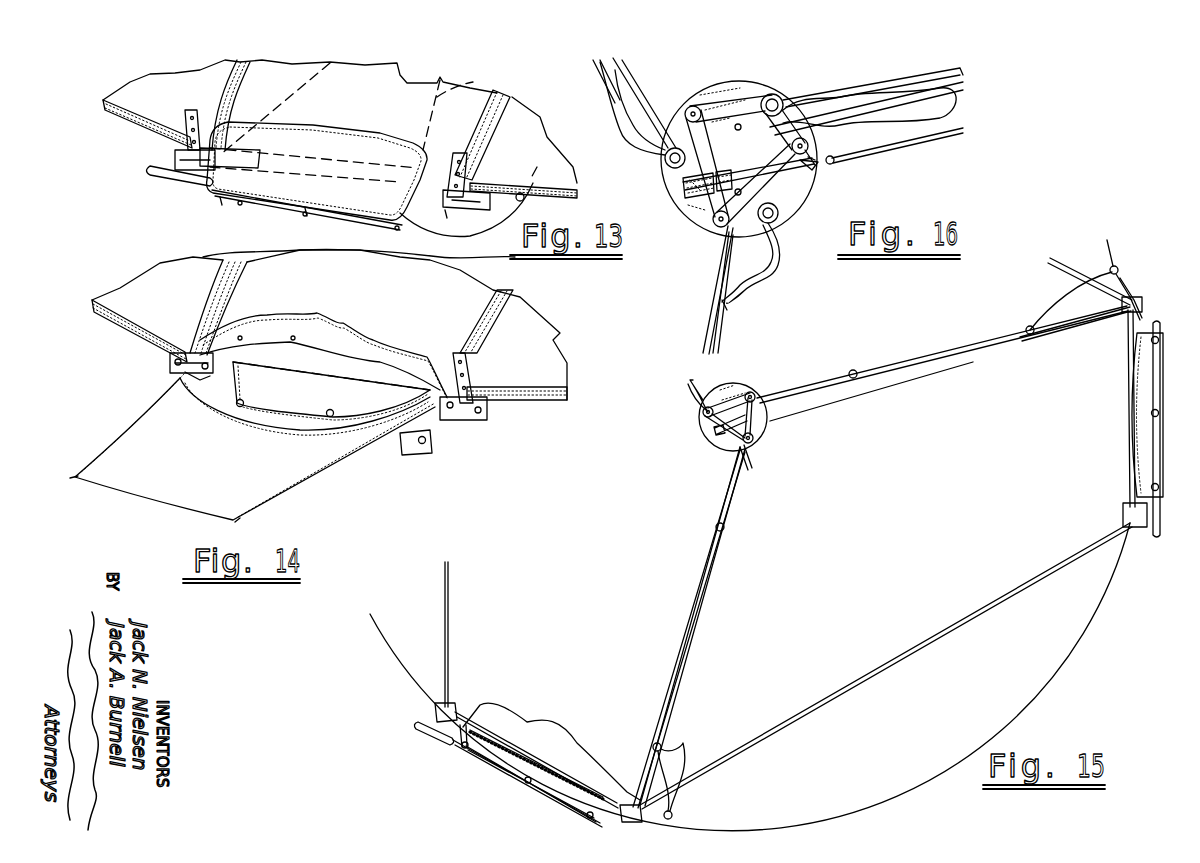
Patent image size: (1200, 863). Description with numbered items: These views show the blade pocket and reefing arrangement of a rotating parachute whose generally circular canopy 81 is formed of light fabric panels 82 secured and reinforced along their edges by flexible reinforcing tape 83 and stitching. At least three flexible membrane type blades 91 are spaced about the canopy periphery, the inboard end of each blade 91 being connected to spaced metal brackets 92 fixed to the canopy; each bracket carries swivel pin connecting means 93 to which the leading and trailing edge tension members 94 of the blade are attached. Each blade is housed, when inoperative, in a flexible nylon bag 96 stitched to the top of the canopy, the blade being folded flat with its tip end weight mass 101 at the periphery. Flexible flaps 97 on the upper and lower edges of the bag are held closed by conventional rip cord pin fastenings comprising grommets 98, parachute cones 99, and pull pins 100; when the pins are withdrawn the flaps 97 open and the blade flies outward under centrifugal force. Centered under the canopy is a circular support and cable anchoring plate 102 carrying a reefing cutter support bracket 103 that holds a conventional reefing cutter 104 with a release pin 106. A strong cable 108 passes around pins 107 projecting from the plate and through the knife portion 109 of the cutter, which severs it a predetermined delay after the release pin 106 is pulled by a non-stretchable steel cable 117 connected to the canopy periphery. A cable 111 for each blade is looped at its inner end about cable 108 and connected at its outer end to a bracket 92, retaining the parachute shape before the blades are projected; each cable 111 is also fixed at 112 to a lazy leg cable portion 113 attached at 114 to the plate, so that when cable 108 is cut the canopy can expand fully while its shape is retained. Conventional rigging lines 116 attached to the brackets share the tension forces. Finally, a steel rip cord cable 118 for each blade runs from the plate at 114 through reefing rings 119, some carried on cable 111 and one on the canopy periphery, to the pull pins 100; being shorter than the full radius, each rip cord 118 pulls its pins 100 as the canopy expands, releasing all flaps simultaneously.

In FIG. 15, the canopy 81 is at (1082, 665).
In FIG. 13, the panels 82 is at (180, 97).
In FIG. 14, the panels 82 is at (178, 299).
In FIG. 13, the flexible reinforcing tape 83 is at (492, 108).
In FIG. 14, the flexible reinforcing tape 83 is at (482, 312).
In FIG. 13, the flexible membrane type blade 91 is at (470, 80).
In FIG. 14, the flexible membrane type blade 91 is at (216, 467).
In FIG. 13, the bracket 92 is at (212, 126).
In FIG. 14, the bracket 92 is at (172, 362).
In FIG. 15, the bracket 92 is at (1135, 530).
In FIG. 13, the swivel pin connecting means 93 is at (170, 158).
In FIG. 14, the swivel pin connecting means 93 is at (200, 382).
In FIG. 14, the tension member 94 is at (76, 476).
In FIG. 13, the flexible bag 96 is at (362, 102).
In FIG. 14, the flexible bag 96 is at (347, 274).
In FIG. 15, the flexible bag 96 is at (522, 720).
In FIG. 13, the flap 97 is at (322, 155).
In FIG. 14, the flap 97 is at (350, 322).
In FIG. 14, the grommet 98 is at (328, 410).
In FIG. 15, the grommet 98 is at (462, 752).
In FIG. 13, the parachute cone 99 is at (220, 202).
In FIG. 14, the parachute cone 99 is at (293, 334).
In FIG. 13, the pull pin 100 is at (240, 203).
In FIG. 15, the pull pin 100 is at (475, 738).
In FIG. 13, the tip end weight mass 101 is at (190, 182).
In FIG. 15, the tip end weight mass 101 is at (450, 740).
In FIG. 15, the support and cable anchoring plate 102 is at (767, 435).
In FIG. 16, the support and cable anchoring plate 102 is at (690, 215).
In FIG. 16, the reefing cutter support bracket 103 is at (810, 182).
In FIG. 15, the reefing cutter 104 is at (728, 440).
In FIG. 16, the reefing cutter 104 is at (756, 168).
In FIG. 16, the release pin 106 is at (838, 157).
In FIG. 16, the pin 107 is at (695, 106).
In FIG. 15, the cable 108 is at (712, 428).
In FIG. 16, the cable 108 is at (770, 94).
In FIG. 16, the knife portion 109 is at (680, 203).
In FIG. 15, the cable 111 is at (1075, 325).
In FIG. 16, the cable 111 is at (640, 103).
In FIG. 16, the attachment point 112 is at (730, 307).
In FIG. 15, the lazy leg cable portion 113 is at (752, 390).
In FIG. 16, the lazy leg cable portion 113 is at (648, 153).
In FIG. 16, the attachment point 114 is at (665, 163).
In FIG. 15, the rigging line 116 is at (1070, 270).
In FIG. 15, the cable 117 is at (913, 377).
In FIG. 16, the cable 117 is at (955, 135).
In FIG. 13, the rip cord cable 118 is at (290, 216).
In FIG. 15, the rip cord cable 118 is at (935, 352).
In FIG. 16, the rip cord cable 118 is at (608, 88).
In FIG. 13, the reefing ring 119 is at (532, 200).
In FIG. 15, the reefing ring 119 is at (661, 745).